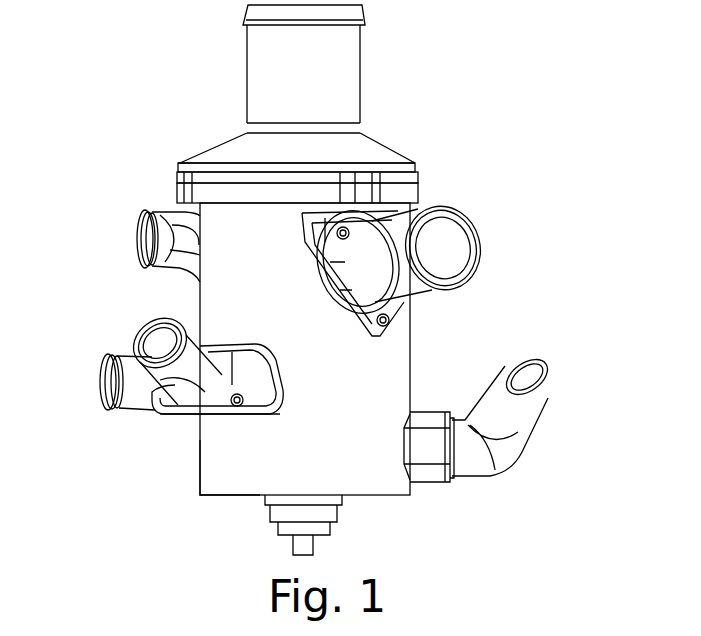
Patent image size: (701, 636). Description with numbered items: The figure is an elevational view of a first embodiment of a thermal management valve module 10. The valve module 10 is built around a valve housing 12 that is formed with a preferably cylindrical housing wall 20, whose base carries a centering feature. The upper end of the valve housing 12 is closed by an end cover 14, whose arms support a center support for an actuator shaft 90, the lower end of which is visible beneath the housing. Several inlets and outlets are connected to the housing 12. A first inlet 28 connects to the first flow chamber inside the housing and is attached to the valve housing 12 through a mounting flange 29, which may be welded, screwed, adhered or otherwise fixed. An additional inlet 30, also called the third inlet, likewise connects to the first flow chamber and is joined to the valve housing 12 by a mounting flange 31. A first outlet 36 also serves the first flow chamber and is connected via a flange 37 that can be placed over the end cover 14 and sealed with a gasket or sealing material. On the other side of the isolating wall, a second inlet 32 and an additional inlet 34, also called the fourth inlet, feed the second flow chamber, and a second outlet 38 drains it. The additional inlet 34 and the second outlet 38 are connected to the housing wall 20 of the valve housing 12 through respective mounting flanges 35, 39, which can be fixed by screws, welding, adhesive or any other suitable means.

The thermal management valve module 10 is at (474, 131).
The valve housing 12 is at (398, 360).
The end cover 14 is at (418, 172).
The housing wall 20 is at (212, 485).
The first inlet 28 is at (152, 212).
The mounting flange 29 is at (137, 250).
The additional inlet 30 is at (470, 270).
The mounting flange 31 is at (395, 312).
The second inlet 32 is at (100, 397).
The additional inlet 34 is at (152, 330).
The mounting flange 35 is at (220, 418).
The first outlet 36 is at (362, 42).
The flange 37 is at (405, 163).
The second outlet 38 is at (530, 432).
The mounting flange 39 is at (432, 483).
The actuator shaft 90 is at (315, 548).